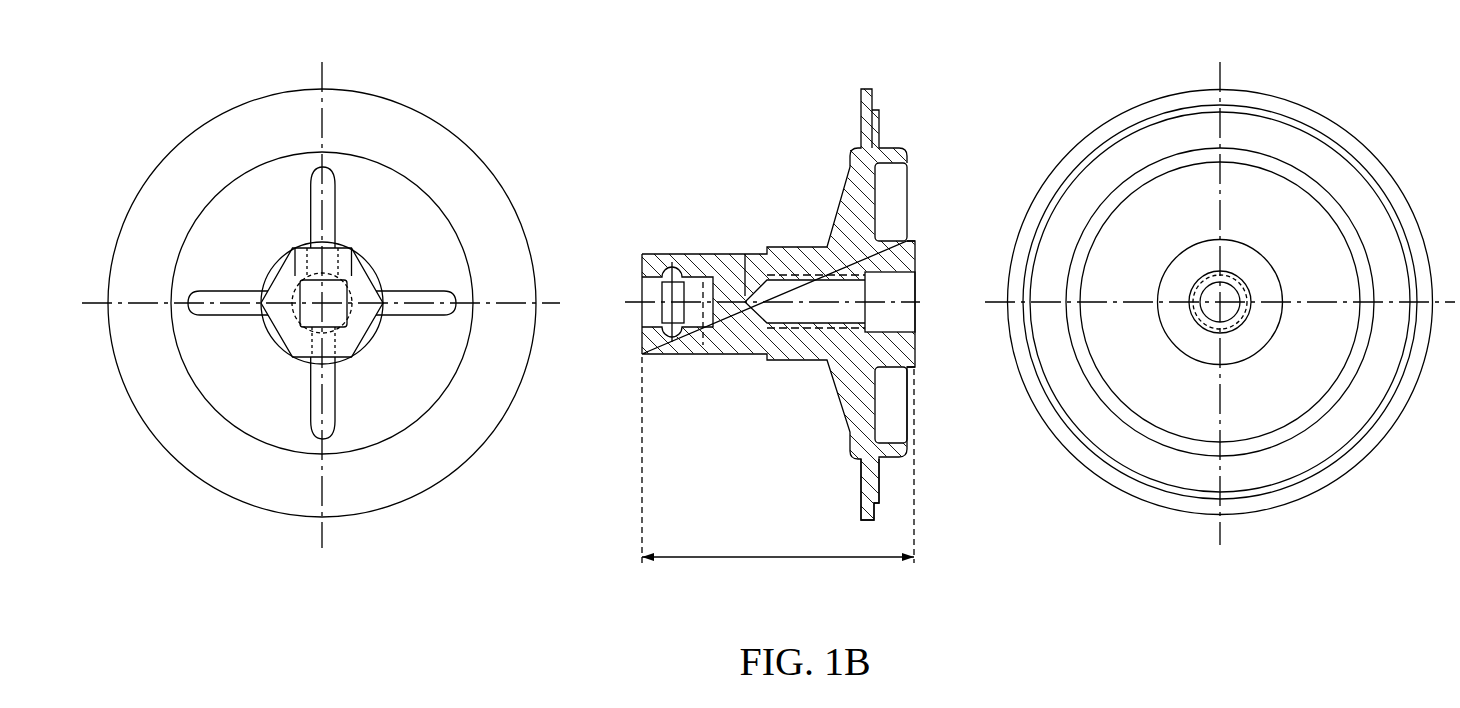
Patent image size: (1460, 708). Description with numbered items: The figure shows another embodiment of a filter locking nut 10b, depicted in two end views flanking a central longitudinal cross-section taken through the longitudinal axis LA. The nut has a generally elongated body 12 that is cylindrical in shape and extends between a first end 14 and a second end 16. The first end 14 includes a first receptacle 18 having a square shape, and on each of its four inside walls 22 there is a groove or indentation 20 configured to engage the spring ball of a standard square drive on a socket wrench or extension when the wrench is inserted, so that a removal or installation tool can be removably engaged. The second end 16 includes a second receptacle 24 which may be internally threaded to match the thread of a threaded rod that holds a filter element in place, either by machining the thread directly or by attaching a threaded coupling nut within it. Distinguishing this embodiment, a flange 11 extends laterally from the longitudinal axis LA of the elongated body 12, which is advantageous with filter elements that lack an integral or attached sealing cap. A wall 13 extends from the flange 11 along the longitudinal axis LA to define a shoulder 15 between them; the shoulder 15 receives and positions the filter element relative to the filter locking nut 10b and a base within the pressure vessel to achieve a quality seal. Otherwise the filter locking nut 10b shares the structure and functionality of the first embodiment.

The filter locking nut 10b is at (762, 125).
The flange 11 is at (860, 489).
The elongated body 12 is at (778, 460).
The wall 13 is at (905, 152).
The first end 14 is at (641, 267).
The shoulder 15 is at (893, 458).
The second end 16 is at (917, 247).
The first receptacle 18 is at (641, 320).
The indentation 20 is at (669, 262).
The inside walls 22 is at (304, 277).
The second receptacle 24 is at (917, 317).
The longitudinal axis LA is at (782, 304).